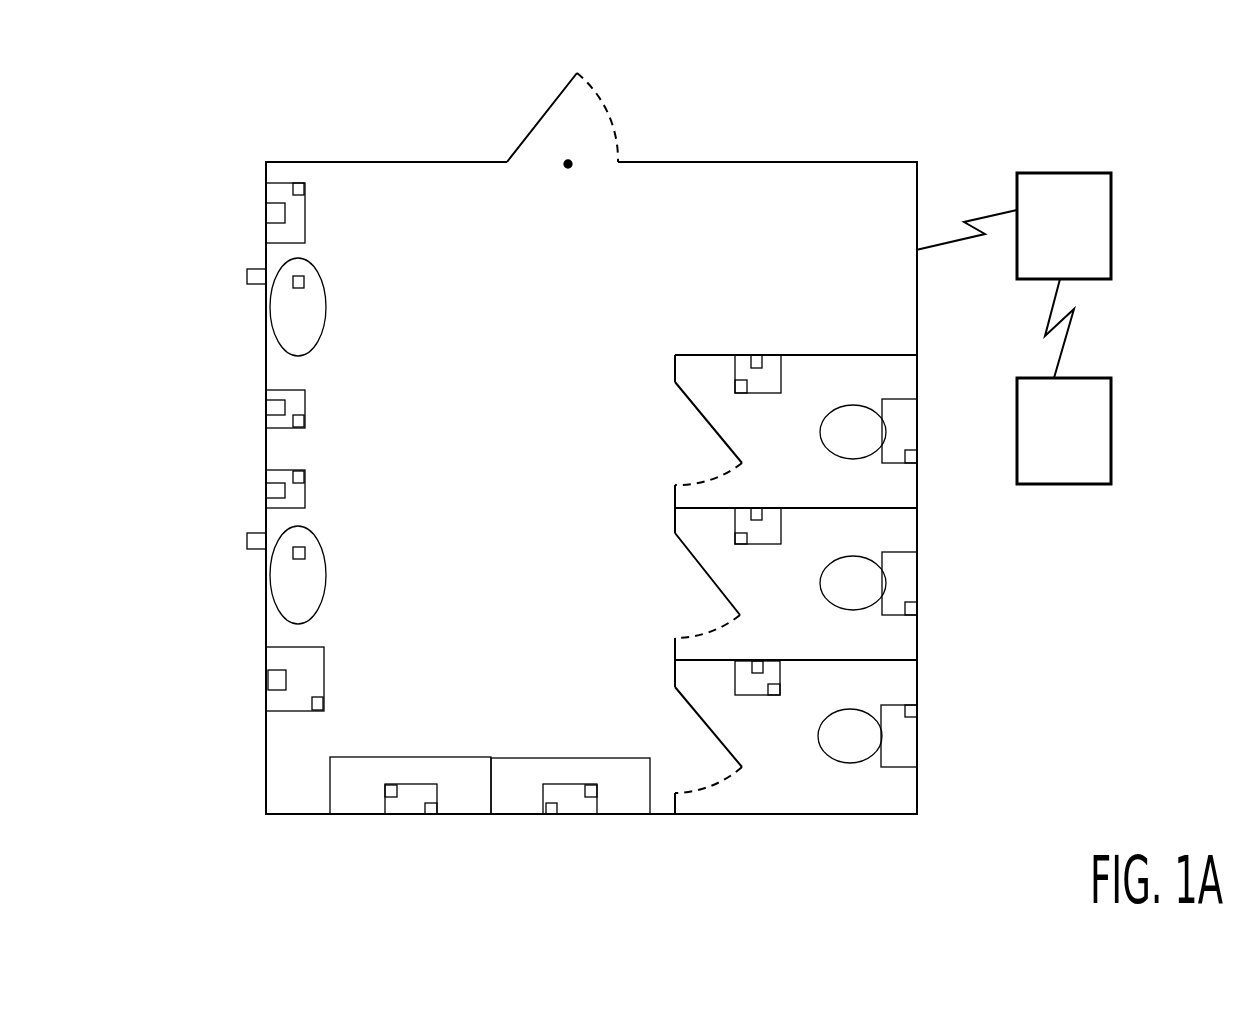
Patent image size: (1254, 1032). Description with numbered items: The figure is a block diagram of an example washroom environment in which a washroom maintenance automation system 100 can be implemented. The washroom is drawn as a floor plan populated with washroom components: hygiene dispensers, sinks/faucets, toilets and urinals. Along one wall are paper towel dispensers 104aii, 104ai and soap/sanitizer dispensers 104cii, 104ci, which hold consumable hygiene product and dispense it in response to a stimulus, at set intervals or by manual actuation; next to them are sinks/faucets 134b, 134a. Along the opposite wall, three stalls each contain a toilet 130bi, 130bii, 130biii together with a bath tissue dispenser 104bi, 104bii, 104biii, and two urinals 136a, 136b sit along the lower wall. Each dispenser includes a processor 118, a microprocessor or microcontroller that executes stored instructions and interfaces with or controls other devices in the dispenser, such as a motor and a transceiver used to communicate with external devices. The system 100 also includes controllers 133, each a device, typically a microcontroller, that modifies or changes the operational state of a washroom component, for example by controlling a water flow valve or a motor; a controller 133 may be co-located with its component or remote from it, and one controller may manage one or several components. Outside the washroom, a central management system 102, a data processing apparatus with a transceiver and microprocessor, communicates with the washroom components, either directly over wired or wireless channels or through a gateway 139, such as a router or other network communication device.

The washroom maintenance automation system 100 is at (225, 143).
The central management system 102 is at (1079, 447).
The processor 118 is at (296, 190).
The controller 133 is at (246, 276).
The gateway 139 is at (1078, 173).
The paper towel dispenser 104aii is at (305, 210).
The soap/sanitizer dispenser 104cii is at (305, 405).
The soap/sanitizer dispenser 104ci is at (305, 497).
The paper towel dispenser 104ai is at (324, 680).
The bath tissue dispenser 104bi is at (763, 393).
The bath tissue dispenser 104bii is at (767, 544).
The bath tissue dispenser 104biii is at (735, 688).
The sink/faucet 134a is at (282, 582).
The sink/faucet 134b is at (285, 315).
The urinal 136a is at (405, 800).
The urinal 136b is at (575, 800).
The toilet 130bi is at (860, 448).
The toilet 130bii is at (860, 598).
The toilet 130biii is at (858, 757).